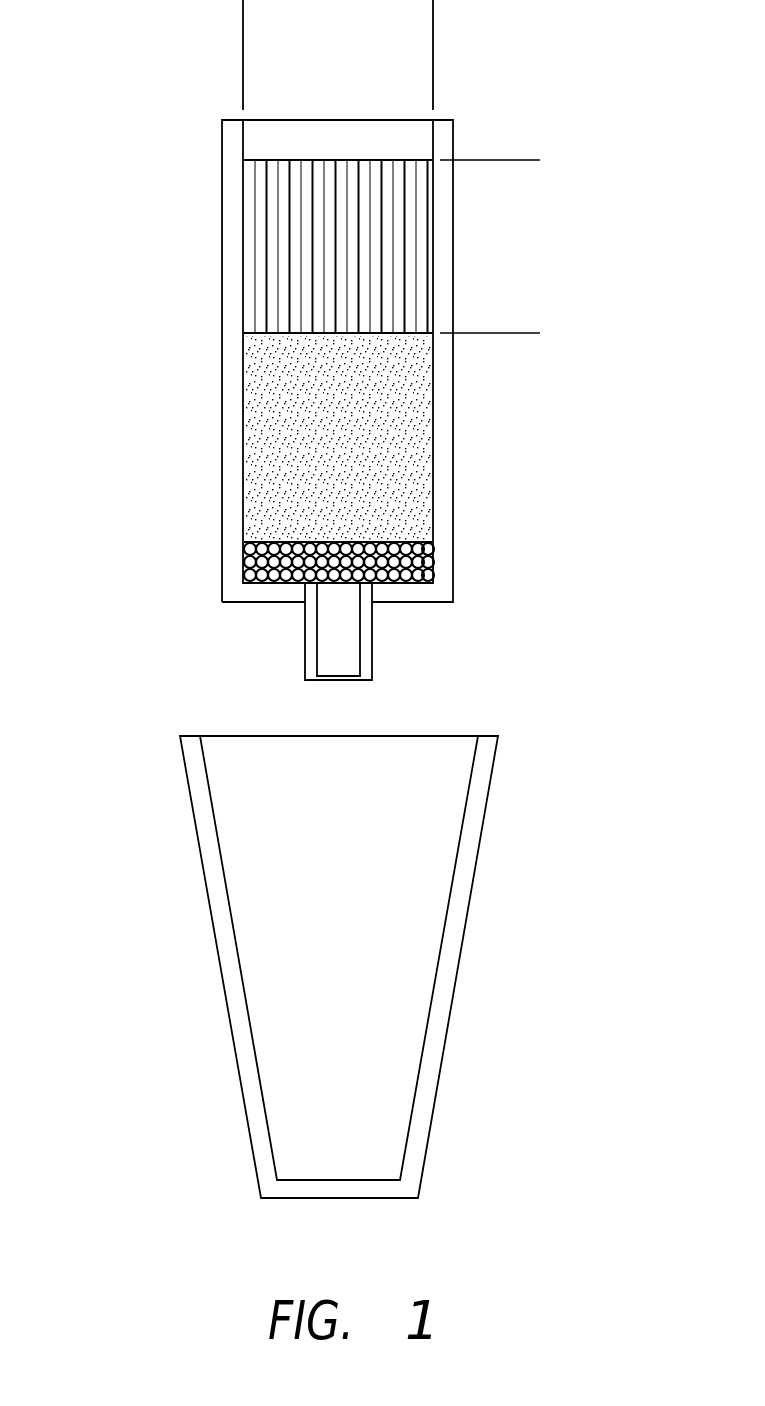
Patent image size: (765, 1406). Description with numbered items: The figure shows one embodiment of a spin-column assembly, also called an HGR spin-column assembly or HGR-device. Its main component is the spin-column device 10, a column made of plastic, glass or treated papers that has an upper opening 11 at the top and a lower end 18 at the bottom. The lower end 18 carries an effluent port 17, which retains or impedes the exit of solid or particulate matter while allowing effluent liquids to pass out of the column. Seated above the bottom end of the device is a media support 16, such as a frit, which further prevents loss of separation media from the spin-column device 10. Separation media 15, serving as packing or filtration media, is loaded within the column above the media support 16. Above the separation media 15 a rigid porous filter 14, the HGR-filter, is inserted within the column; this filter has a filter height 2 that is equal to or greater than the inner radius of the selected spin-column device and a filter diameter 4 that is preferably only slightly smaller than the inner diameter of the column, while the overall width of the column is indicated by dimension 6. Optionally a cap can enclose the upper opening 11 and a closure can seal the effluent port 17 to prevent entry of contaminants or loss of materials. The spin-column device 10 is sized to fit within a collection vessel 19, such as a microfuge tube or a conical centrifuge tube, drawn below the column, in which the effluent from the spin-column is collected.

The spin-column device 10 is at (189, 120).
The upper opening 11 is at (338, 119).
The rigid porous filter 14 is at (437, 218).
The separation media 15 is at (437, 448).
The media support 16 is at (436, 563).
The effluent port 17 is at (375, 642).
The lower end 18 is at (436, 602).
The collection vessel 19 is at (433, 1120).
The filter height 2 is at (518, 160).
The filter diameter 4 is at (243, 245).
The outer diameter dimension 6 is at (243, 22).